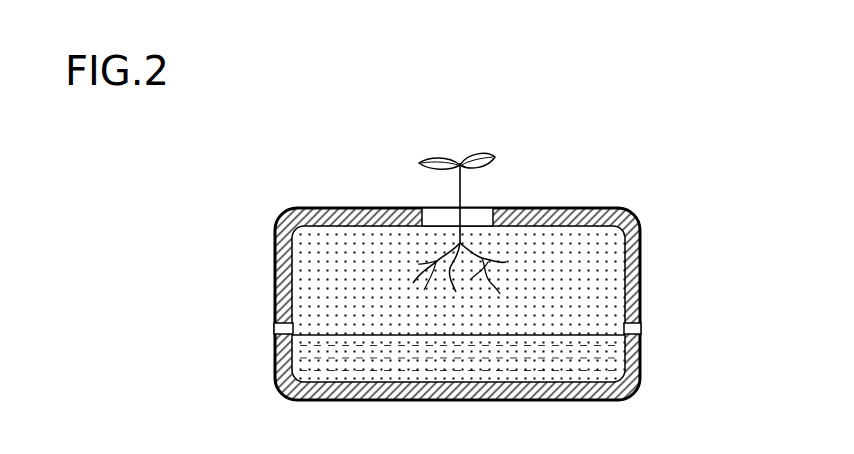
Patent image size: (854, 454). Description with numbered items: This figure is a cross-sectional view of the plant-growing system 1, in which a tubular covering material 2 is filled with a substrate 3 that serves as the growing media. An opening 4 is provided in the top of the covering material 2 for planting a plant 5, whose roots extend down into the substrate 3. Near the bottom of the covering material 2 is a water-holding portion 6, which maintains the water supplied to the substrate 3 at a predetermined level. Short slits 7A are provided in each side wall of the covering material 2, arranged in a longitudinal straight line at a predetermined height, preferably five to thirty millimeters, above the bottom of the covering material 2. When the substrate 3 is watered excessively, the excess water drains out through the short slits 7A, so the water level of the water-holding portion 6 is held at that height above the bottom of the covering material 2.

The plant-growing system 1 is at (236, 252).
The tubular covering material 2 is at (580, 208).
The substrate 3 is at (607, 255).
The opening 4 is at (484, 208).
The plant 5 is at (441, 151).
The water-holding portion 6 is at (548, 375).
The short slits 7A is at (645, 328).